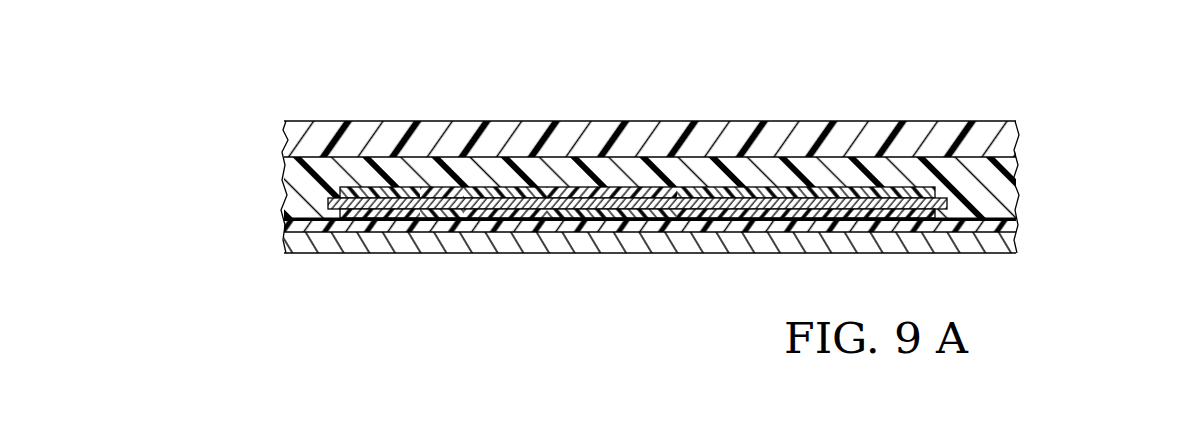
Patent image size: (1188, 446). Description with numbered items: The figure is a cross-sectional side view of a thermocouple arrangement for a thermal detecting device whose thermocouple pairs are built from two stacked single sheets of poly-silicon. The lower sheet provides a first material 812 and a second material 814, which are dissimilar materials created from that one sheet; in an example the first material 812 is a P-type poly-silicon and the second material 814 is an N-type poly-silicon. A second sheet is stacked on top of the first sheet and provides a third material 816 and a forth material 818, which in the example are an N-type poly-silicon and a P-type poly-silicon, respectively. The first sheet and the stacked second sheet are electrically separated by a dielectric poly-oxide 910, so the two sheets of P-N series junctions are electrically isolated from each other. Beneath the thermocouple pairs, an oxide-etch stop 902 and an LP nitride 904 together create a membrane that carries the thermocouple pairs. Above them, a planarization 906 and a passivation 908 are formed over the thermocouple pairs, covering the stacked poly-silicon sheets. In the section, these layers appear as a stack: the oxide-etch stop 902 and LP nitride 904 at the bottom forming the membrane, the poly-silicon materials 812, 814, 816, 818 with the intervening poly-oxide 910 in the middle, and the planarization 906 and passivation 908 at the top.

The oxide-etch stop 902 is at (310, 255).
The LP nitride 904 is at (283, 222).
The planarization 906 is at (1013, 172).
The passivation 908 is at (1003, 124).
The poly-oxide 910 is at (283, 158).
The first material 812 is at (440, 221).
The second material 814 is at (384, 213).
The third material 816 is at (419, 201).
The forth material 818 is at (356, 192).